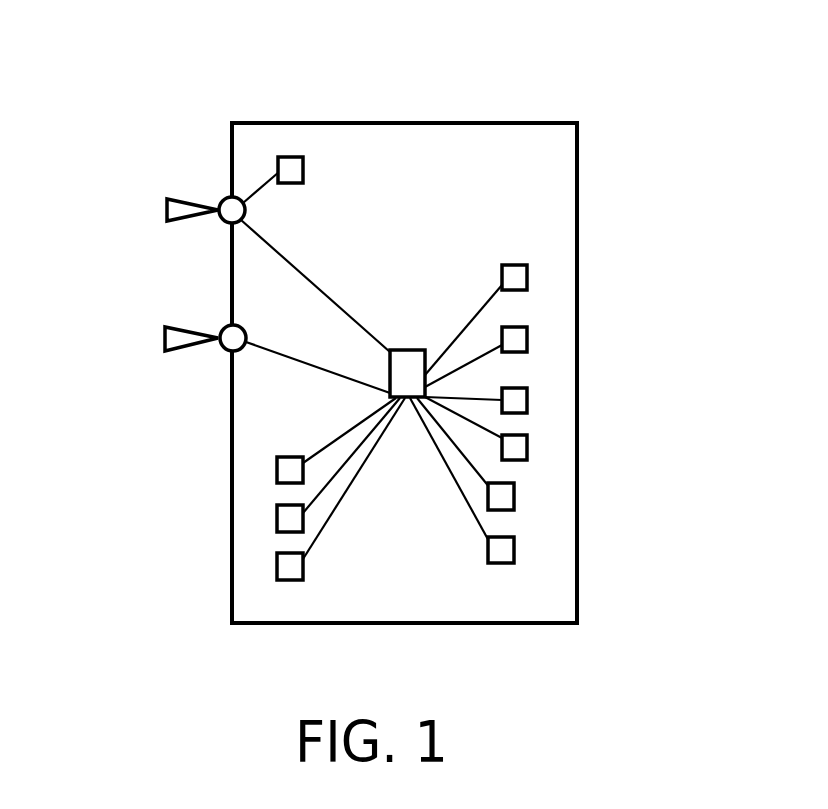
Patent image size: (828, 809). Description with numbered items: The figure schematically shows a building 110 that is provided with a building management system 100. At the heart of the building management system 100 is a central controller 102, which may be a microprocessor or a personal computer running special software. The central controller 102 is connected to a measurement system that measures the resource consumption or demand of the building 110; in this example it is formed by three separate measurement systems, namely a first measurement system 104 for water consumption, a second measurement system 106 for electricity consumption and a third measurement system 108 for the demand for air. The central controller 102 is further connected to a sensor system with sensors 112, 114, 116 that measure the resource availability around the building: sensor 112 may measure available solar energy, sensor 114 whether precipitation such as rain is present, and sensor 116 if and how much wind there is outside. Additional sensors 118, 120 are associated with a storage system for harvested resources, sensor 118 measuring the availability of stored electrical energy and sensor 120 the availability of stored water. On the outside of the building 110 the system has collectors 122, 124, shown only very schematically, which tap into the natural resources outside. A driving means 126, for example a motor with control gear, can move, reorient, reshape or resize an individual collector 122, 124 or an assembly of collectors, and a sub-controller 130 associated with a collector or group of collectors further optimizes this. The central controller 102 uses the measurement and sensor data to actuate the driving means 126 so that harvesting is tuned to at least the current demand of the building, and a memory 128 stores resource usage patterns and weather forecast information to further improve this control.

The building management system 100 is at (186, 91).
The building 110 is at (480, 123).
The central controller 102 is at (409, 358).
The first measurement system 104 is at (518, 340).
The second measurement system 106 is at (518, 401).
The third measurement system 108 is at (518, 448).
The sensor 112 is at (290, 471).
The sensor 114 is at (290, 518).
The sensor 116 is at (290, 566).
The sensor 118 is at (505, 496).
The sensor 120 is at (505, 550).
The collector 122 is at (176, 210).
The collector 124 is at (175, 338).
The driving means 126 is at (224, 221).
The memory 128 is at (518, 278).
The sub-controller 130 is at (292, 165).